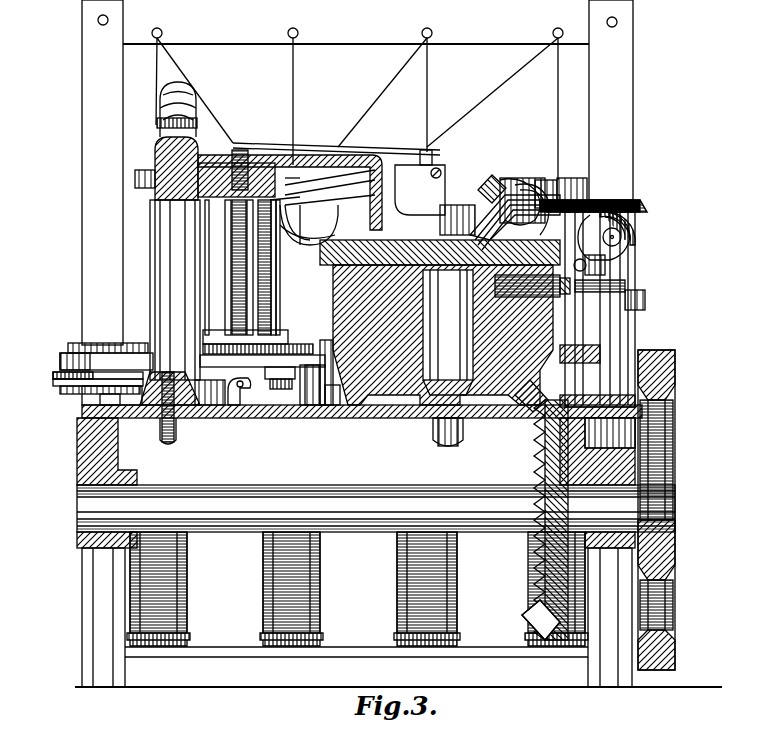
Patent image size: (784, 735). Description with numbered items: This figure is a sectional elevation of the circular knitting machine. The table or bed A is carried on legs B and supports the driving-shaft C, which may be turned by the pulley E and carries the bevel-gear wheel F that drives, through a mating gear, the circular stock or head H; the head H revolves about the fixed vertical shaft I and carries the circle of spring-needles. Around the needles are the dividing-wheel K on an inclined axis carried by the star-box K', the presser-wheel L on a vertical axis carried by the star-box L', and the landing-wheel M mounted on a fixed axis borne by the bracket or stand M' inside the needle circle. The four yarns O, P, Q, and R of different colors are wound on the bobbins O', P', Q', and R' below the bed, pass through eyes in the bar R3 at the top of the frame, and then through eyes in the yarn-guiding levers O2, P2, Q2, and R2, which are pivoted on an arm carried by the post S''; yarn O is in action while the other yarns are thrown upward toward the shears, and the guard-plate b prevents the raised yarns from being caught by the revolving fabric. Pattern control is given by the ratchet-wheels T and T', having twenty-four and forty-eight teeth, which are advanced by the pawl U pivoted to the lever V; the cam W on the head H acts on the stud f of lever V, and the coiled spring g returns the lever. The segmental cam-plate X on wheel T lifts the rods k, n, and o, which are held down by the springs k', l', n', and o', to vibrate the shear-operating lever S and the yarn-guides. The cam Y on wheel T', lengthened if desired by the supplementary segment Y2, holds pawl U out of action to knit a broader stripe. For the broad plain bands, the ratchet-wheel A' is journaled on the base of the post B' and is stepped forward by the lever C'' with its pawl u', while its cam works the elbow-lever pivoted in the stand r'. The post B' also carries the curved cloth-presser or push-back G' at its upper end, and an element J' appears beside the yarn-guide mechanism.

The bar R3 is at (357, 24).
The yarn R is at (194, 90).
The yarn Q is at (300, 101).
The yarn P is at (388, 95).
The yarn O is at (501, 109).
The shear-operating lever S is at (336, 145).
The post S'' is at (163, 141).
The curved cloth-presser G' is at (293, 177).
The guard-plate b is at (420, 190).
The yarn-guiding lever P2 is at (320, 190).
The yarn-guiding lever R2 is at (285, 201).
The yarn-guiding lever Q2 is at (295, 181).
The yarn-guiding lever O2 is at (307, 230).
The post B' is at (175, 290).
The spring l' is at (230, 267).
The rod o is at (233, 267).
The rod k is at (221, 267).
The spring o' is at (224, 267).
The spring k' is at (280, 267).
The rod n is at (286, 267).
The spring n' is at (284, 267).
The gear J' is at (309, 238).
The stud f is at (258, 342).
The pawl U is at (262, 371).
The lever V is at (315, 379).
The pawl u' is at (280, 387).
The coiled spring g is at (334, 396).
The stand r' is at (245, 409).
The lever C'' is at (210, 411).
The ratchet-wheel A' is at (164, 408).
The ratchet-wheel T is at (106, 364).
The segmental cam-plate X is at (112, 352).
The cam Y is at (56, 374).
The supplementary segment Y2 is at (60, 386).
The ratchet-wheel T' is at (101, 399).
The circular stock or head H is at (440, 322).
The fixed vertical shaft I is at (448, 332).
The bracket or stand M' is at (498, 222).
The dividing-wheel K is at (511, 188).
The landing-wheel M is at (527, 194).
The star-box K' is at (560, 180).
The presser-wheel L is at (593, 196).
The star-box L' is at (621, 236).
The cam W is at (605, 347).
The table or bed A is at (359, 476).
The pulley E is at (662, 510).
The driving-shaft C is at (376, 508).
The legs B is at (398, 617).
The bobbin R' is at (166, 589).
The bobbin Q' is at (302, 589).
The bobbin P' is at (435, 589).
The bobbin O' is at (569, 589).
The bevel-gear wheel F is at (538, 462).